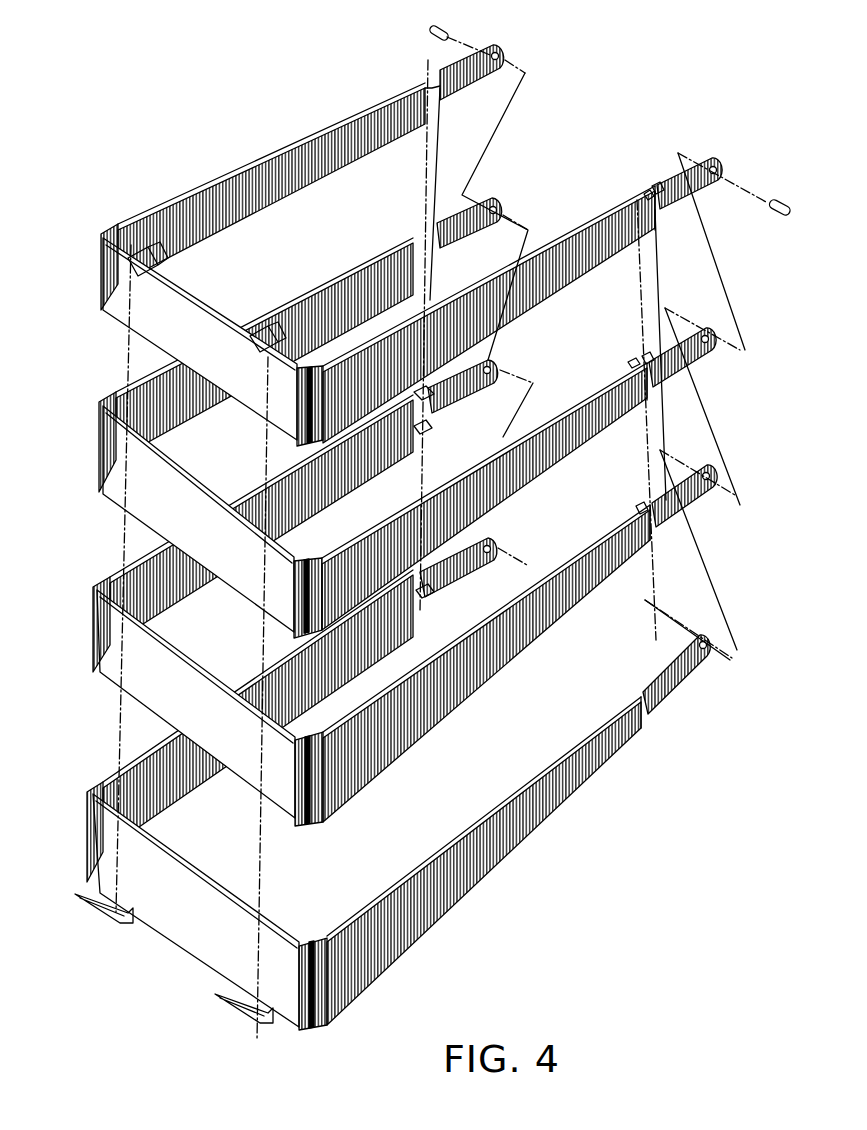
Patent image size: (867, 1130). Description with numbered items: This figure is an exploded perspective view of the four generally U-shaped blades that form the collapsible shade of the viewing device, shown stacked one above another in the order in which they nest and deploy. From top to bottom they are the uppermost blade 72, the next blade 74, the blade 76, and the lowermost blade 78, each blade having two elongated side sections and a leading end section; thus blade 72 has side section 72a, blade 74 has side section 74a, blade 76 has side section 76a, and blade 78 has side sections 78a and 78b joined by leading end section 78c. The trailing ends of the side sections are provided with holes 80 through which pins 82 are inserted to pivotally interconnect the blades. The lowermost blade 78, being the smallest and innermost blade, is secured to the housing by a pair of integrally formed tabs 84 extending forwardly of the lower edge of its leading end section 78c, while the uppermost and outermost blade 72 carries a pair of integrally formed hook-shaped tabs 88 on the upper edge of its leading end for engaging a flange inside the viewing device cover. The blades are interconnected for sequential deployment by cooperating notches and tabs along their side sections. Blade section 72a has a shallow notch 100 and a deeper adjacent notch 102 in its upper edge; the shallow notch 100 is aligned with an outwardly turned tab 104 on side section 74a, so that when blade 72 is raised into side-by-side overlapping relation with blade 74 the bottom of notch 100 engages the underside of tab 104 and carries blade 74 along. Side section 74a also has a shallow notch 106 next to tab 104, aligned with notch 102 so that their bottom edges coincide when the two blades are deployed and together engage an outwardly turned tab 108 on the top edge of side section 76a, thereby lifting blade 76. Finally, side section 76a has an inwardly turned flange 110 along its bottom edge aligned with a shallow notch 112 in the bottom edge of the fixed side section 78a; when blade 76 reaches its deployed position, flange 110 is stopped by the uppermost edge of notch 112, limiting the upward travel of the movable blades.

The uppermost blade 72 is at (96, 274).
The blade side section 72a is at (560, 276).
The blade 74 is at (93, 436).
The blade side section 74a is at (570, 436).
The blade 76 is at (88, 612).
The blade side section 76a is at (586, 590).
The lowermost blade 78 is at (84, 818).
The blade side section 78a is at (402, 937).
The blade side section 78b is at (194, 792).
The leading end section 78c is at (200, 932).
The holes 80 is at (735, 162).
The pins 82 is at (442, 29).
The tabs 84 is at (103, 909).
The hook-shaped tabs 88 is at (264, 346).
The shallow notch 100 is at (650, 198).
The deeper notch 102 is at (658, 186).
The outwardly turned tab 104 is at (634, 361).
The shallow notch 106 is at (648, 356).
The outwardly turned tab 108 is at (428, 400).
The inwardly turned flange 110 is at (428, 430).
The shallow notch 112 is at (428, 596).